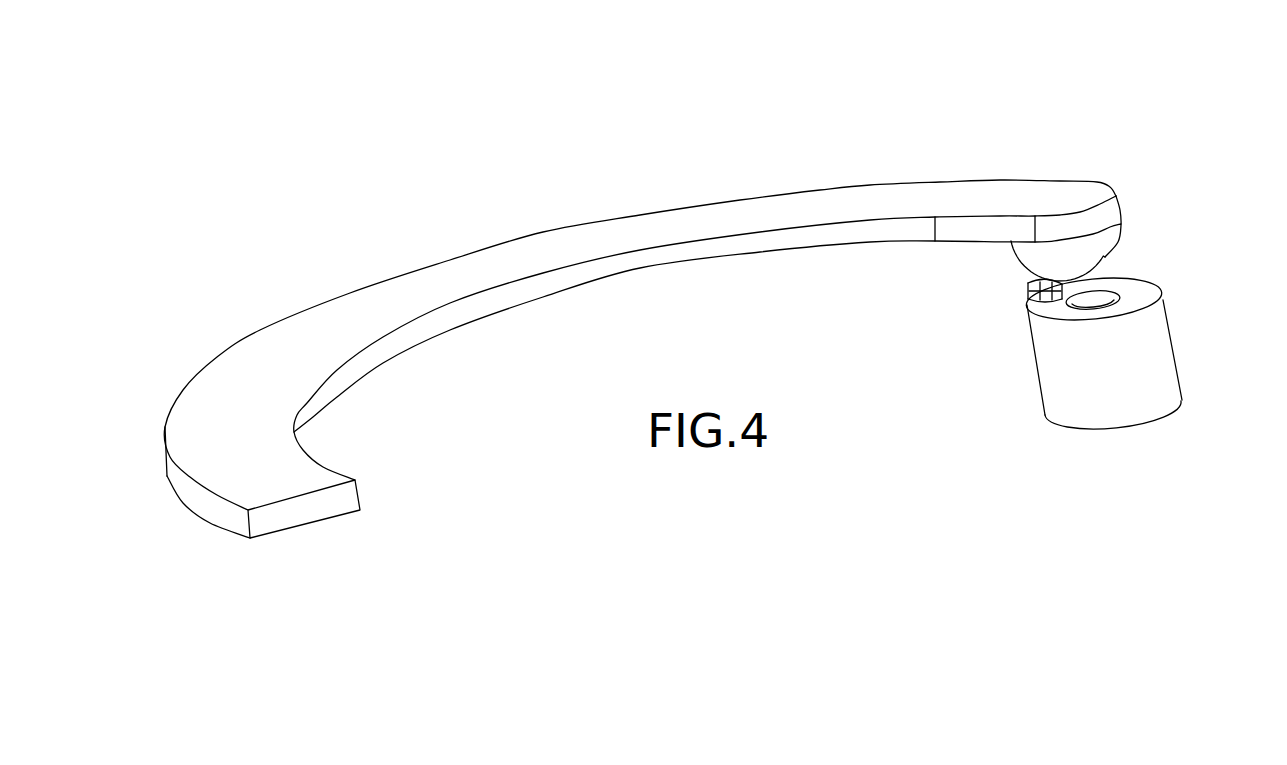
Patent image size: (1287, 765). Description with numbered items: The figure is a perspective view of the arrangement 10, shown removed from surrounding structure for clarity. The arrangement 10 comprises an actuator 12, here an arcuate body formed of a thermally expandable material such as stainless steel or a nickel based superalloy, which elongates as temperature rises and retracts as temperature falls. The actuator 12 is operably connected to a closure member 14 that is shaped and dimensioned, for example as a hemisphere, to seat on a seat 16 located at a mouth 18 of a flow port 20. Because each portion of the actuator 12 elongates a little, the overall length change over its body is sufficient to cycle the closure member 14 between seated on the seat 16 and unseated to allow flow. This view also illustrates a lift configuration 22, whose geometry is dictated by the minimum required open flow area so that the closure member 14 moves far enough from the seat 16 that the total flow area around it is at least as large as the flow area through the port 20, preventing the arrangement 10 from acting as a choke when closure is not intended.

The arrangement 10 is at (578, 155).
The actuator 12 is at (870, 198).
The closure member 14 is at (1093, 250).
The seat 16 is at (1115, 294).
The mouth 18 is at (1135, 300).
The flow port 20 is at (1101, 306).
The lift configuration 22 is at (1027, 286).